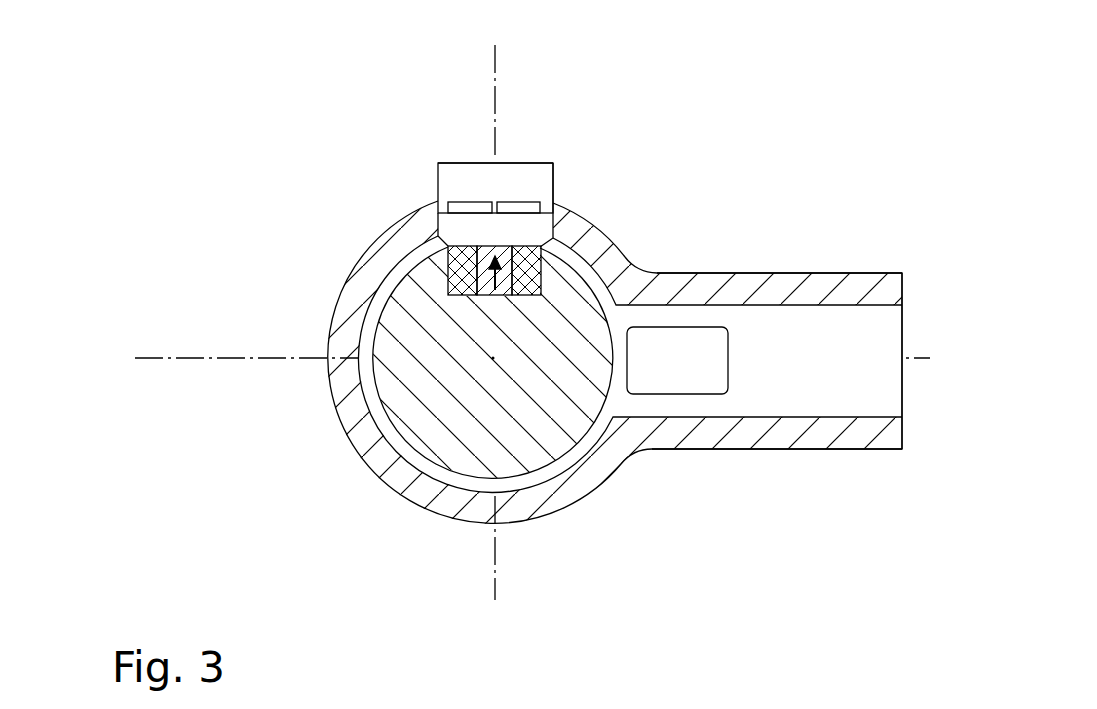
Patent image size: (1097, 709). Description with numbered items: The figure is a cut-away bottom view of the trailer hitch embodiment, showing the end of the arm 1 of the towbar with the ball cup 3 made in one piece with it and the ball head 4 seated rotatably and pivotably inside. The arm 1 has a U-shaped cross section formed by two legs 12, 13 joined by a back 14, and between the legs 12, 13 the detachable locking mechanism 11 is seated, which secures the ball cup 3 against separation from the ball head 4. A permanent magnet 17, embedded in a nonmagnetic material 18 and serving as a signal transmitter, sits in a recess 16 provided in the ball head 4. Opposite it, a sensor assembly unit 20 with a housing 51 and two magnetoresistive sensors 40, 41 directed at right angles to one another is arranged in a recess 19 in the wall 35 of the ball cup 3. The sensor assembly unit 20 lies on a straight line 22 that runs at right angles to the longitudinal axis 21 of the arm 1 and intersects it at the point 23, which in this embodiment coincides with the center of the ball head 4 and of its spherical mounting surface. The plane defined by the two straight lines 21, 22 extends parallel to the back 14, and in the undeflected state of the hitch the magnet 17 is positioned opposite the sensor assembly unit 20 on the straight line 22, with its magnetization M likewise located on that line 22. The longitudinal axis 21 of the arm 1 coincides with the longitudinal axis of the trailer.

The arm 1 is at (862, 450).
The ball cup 3 is at (347, 278).
The ball head 4 is at (417, 415).
The locking mechanism 11 is at (685, 382).
The leg 12 is at (760, 285).
The leg 13 is at (780, 432).
The back 14 is at (835, 340).
The recess 16 is at (543, 268).
The permanent magnet 17 is at (468, 248).
The nonmagnetic material 18 is at (458, 272).
The recess 19 is at (550, 212).
The sensor assembly unit 20 is at (519, 178).
The longitudinal axis 21 is at (227, 357).
The straight line 22 is at (498, 545).
The point 23 is at (490, 355).
The wall 35 is at (418, 490).
The magnetoresistive sensor 40 is at (467, 207).
The magnetoresistive sensor 41 is at (513, 207).
The housing 51 is at (549, 160).
The magnetization M is at (540, 225).